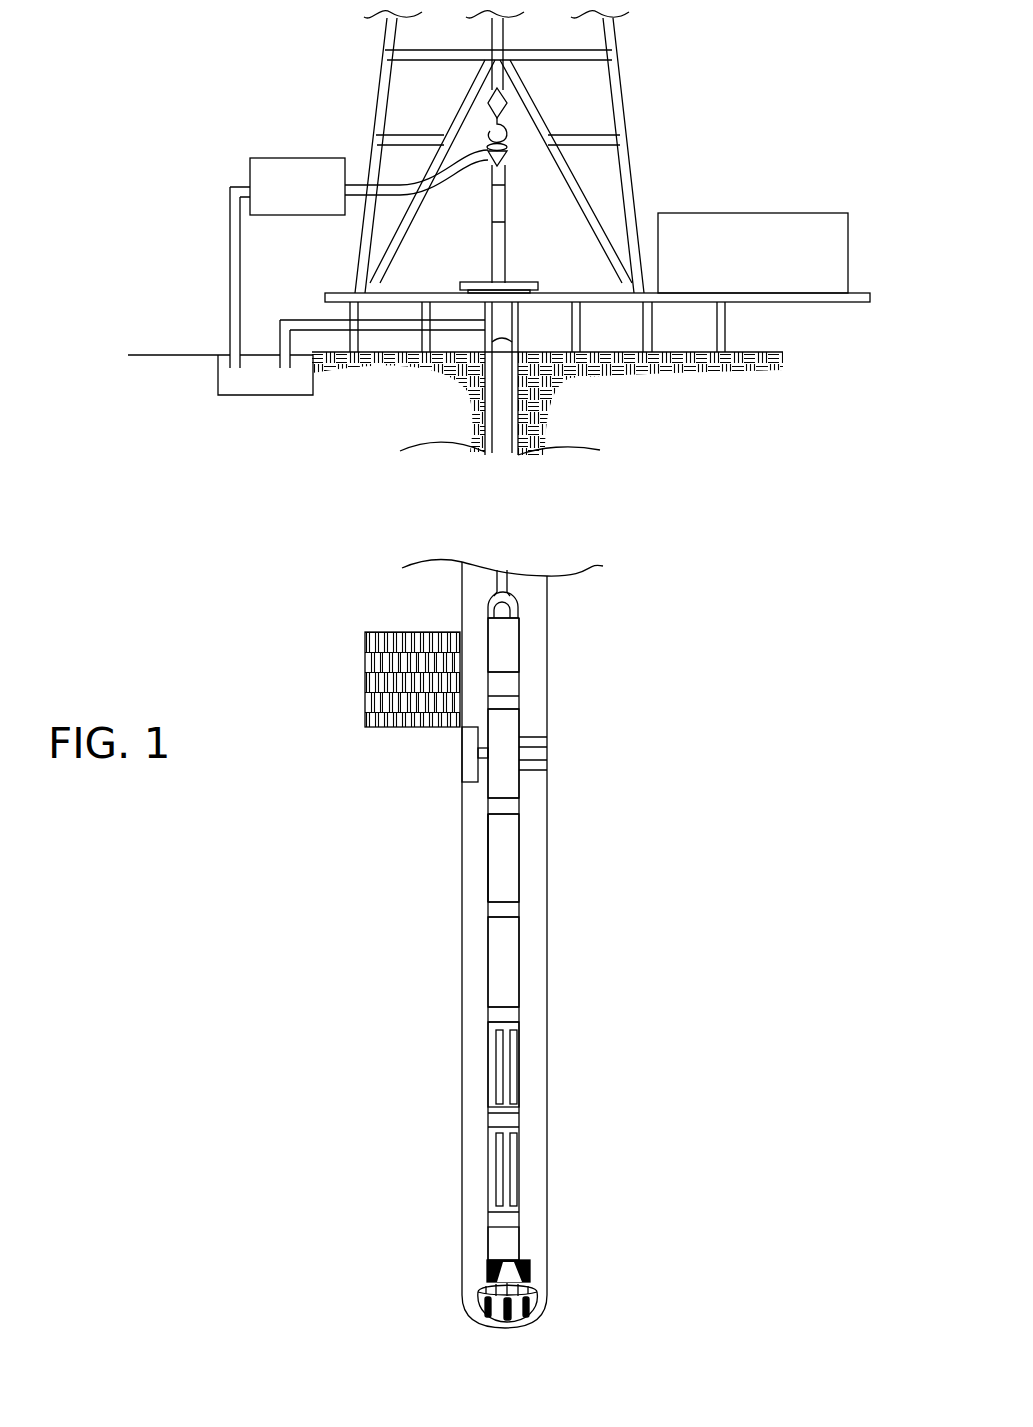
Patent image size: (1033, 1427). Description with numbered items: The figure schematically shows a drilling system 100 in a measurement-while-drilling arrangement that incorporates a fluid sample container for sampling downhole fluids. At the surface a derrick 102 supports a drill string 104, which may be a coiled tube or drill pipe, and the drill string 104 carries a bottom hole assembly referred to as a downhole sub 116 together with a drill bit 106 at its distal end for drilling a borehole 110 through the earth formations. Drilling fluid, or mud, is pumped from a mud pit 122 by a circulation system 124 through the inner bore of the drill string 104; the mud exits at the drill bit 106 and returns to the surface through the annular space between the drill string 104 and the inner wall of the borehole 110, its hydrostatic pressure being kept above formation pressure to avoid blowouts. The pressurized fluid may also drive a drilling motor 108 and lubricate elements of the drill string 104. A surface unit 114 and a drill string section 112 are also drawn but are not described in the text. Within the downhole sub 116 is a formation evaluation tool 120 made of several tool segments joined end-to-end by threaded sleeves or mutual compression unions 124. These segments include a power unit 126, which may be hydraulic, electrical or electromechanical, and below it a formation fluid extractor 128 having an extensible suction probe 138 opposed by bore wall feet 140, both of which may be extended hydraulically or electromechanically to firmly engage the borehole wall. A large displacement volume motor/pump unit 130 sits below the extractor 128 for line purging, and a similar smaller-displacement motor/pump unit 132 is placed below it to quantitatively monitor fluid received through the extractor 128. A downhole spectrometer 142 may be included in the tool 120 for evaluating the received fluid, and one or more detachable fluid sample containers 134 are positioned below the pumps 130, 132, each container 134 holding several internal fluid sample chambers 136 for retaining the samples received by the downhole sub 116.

The drilling system 100 is at (737, 146).
The derrick 102 is at (617, 80).
The drill string 104 is at (508, 415).
The drill bit 106 is at (537, 1294).
The drilling motor 108 is at (524, 1247).
The borehole 110 is at (470, 407).
The drill string section 112 is at (520, 683).
The surface control unit 114 is at (775, 265).
The downhole sub 116 is at (642, 601).
The formation evaluation tool 120 is at (520, 725).
The mud pit 122 is at (242, 395).
The circulation system 124 is at (277, 158).
The power unit 126 is at (505, 643).
The formation fluid extractor 128 is at (503, 787).
The large displacement volume motor/pump unit 130 is at (503, 865).
The motor/pump unit 132 is at (497, 880).
The detachable fluid sample container 134 is at (513, 1084).
The internal fluid sample chamber 136 is at (500, 1070).
The extensible suction probe 138 is at (468, 755).
The bore wall feet 140 is at (540, 767).
The spectrometer 142 is at (505, 973).